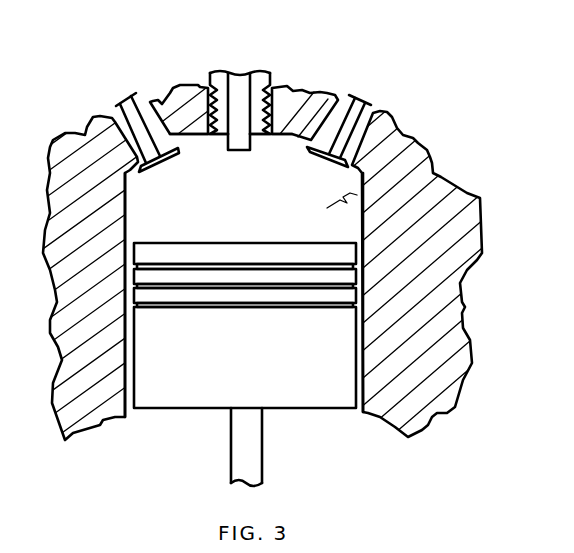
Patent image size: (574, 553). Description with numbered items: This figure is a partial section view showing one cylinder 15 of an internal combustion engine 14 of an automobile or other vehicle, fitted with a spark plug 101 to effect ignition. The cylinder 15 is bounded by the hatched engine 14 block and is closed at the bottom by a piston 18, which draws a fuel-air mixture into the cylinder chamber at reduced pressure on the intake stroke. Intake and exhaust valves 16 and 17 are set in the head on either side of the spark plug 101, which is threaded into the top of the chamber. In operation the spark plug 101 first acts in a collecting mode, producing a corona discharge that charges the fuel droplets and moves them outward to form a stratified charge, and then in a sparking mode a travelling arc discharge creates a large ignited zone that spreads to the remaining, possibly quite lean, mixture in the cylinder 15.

The engine 14 is at (283, 263).
The cylinder 15 is at (420, 147).
The intake valve 16 is at (150, 146).
The exhaust valve 17 is at (322, 147).
The piston 18 is at (245, 346).
The spark plug 101 is at (295, 97).